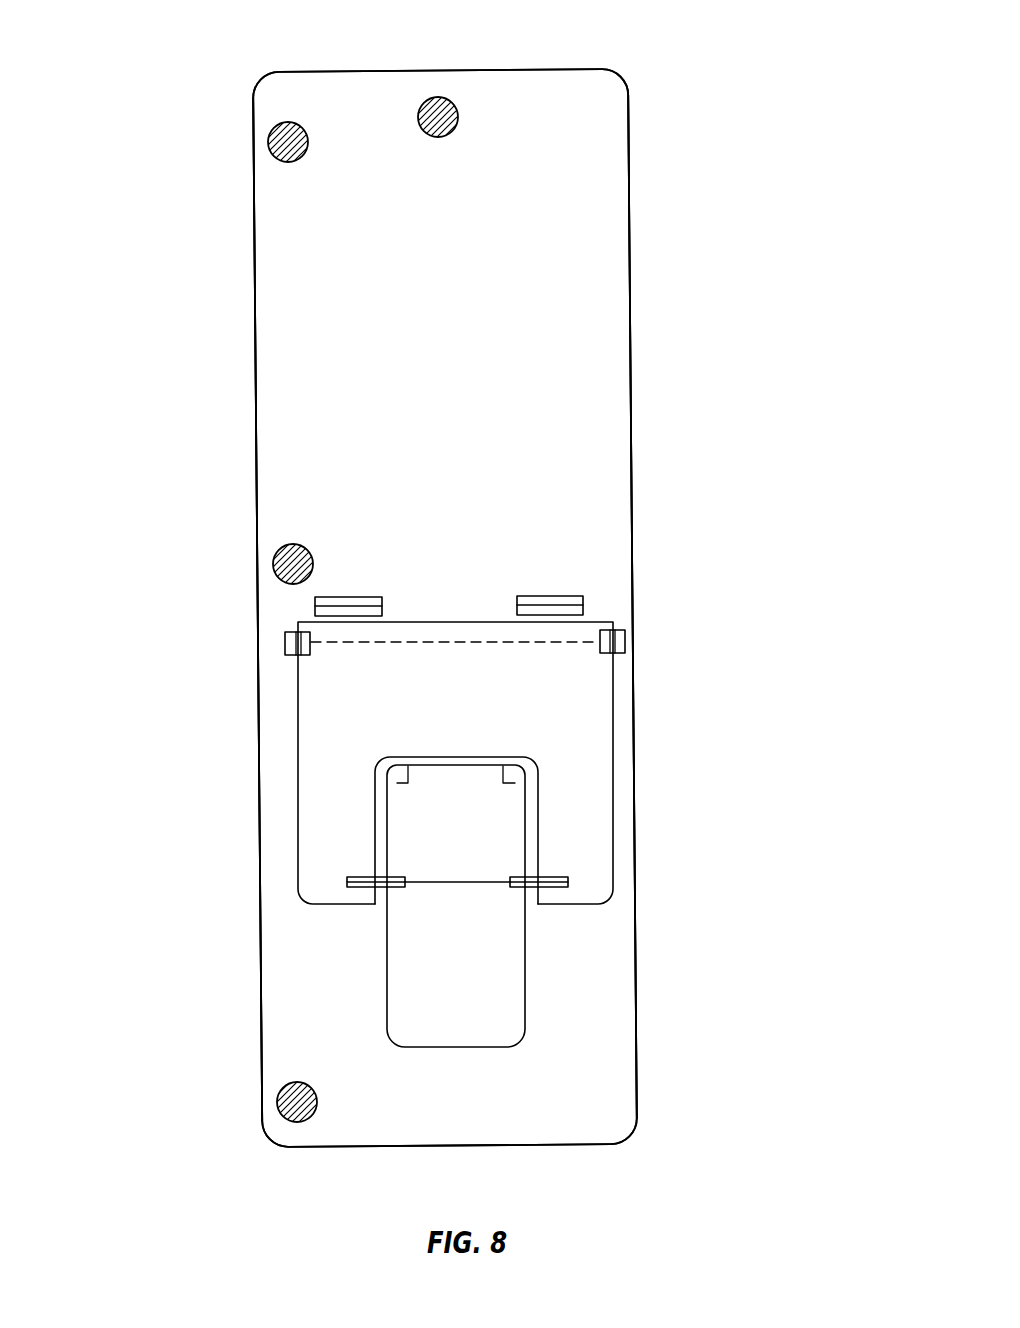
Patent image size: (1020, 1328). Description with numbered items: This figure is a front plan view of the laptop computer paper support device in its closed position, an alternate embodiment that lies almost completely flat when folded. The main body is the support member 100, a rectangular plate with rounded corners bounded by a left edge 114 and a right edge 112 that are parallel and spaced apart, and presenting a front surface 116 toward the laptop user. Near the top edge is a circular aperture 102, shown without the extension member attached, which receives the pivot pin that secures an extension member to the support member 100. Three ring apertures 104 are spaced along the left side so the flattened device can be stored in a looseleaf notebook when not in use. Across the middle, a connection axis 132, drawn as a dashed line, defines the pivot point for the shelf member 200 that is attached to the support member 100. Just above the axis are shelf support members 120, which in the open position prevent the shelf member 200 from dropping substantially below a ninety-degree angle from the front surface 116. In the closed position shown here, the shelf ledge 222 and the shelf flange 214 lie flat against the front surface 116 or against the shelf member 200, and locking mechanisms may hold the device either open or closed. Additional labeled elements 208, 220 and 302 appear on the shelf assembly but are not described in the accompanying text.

The support member 100 is at (438, 248).
The circular aperture 102 is at (440, 102).
The ring apertures 104 is at (275, 132).
The right edge 112 is at (632, 533).
The left edge 114 is at (255, 428).
The front surface 116 is at (603, 405).
The shelf support members 120 is at (347, 598).
The connection axis 132 is at (424, 642).
The shelf member 200 is at (455, 763).
The fasteners 208 is at (633, 640).
The shelf flange 214 is at (473, 998).
The aperture 220 is at (471, 845).
The shelf ledge 222 is at (585, 808).
The pins 302 is at (568, 881).